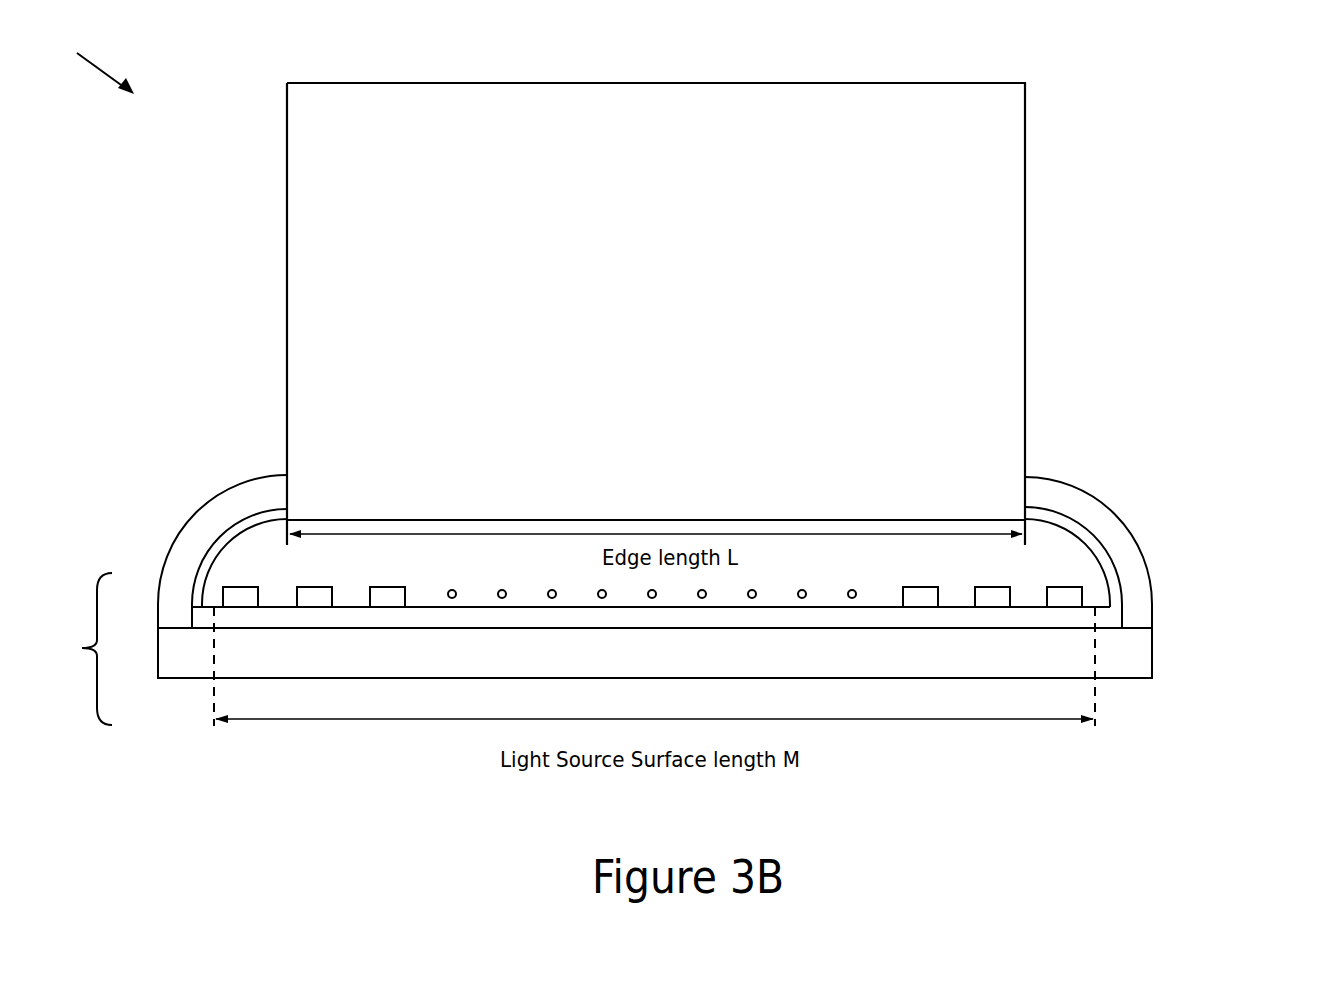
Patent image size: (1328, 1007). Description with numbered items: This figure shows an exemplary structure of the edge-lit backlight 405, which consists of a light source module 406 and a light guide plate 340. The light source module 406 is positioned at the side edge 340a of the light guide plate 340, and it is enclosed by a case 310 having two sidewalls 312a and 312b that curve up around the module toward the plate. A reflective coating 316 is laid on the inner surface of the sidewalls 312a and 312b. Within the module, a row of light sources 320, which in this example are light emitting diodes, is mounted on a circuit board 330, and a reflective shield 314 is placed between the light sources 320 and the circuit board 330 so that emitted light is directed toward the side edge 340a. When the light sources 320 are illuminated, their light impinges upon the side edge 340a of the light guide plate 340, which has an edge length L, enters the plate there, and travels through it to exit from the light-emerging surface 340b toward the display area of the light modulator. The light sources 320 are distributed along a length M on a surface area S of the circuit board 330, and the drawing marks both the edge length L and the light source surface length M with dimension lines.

The backlight 405 is at (105, 64).
The light source module 406 is at (69, 649).
The case 310 is at (681, 536).
The sidewall 312a is at (203, 532).
The sidewall 312b is at (1135, 583).
The reflective coating 316 is at (253, 520).
The reflective shield 314 is at (413, 618).
The light sources 320 is at (240, 597).
The circuit board 330 is at (1128, 655).
The light guide plate 340 is at (1000, 183).
The side edge 340a is at (445, 512).
The light-emerging surface 340b is at (312, 240).